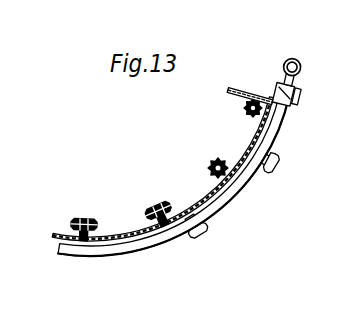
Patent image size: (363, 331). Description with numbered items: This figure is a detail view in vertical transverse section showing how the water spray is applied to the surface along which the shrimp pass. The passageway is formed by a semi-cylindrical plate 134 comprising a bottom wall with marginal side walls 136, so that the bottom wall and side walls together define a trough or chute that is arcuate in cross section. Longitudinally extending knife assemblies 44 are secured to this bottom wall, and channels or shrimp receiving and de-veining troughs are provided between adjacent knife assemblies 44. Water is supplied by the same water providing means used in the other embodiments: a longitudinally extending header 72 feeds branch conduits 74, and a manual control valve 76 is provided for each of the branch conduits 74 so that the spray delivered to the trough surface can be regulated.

The header 72 is at (301, 63).
The manual control valve 76 is at (290, 97).
The marginal side walls 136 is at (234, 93).
The branch conduits 74 is at (253, 163).
The knife assemblies 44 is at (91, 218).
The semi-cylindrical plate 134 is at (122, 231).